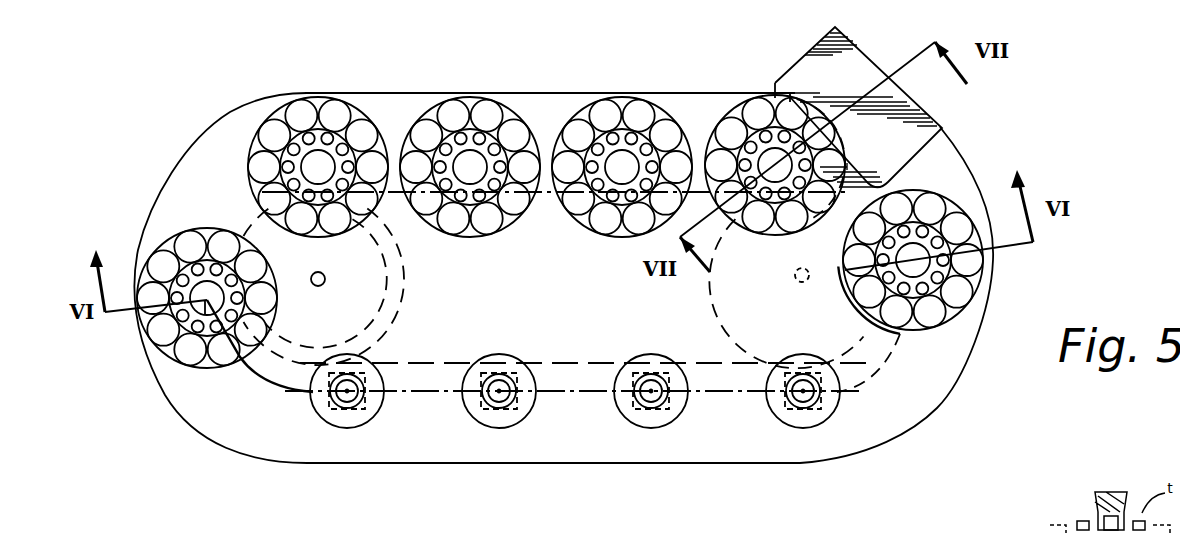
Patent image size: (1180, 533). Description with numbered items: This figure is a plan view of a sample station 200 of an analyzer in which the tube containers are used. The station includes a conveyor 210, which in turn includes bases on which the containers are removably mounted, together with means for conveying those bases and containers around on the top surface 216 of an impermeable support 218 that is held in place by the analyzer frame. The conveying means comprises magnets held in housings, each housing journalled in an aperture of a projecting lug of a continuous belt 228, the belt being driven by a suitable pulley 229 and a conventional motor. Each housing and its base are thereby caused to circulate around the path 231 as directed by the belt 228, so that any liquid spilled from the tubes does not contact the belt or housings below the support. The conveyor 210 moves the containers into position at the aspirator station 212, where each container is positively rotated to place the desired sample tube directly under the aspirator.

The sample station 200 is at (167, 142).
The aspirator station 212 is at (790, 63).
The top surface 216 is at (627, 318).
The impermeable support 218 is at (937, 408).
The conveyor 210 is at (245, 460).
The continuous belt 228 is at (555, 368).
The pulley 229 is at (407, 281).
The path 231 is at (263, 390).